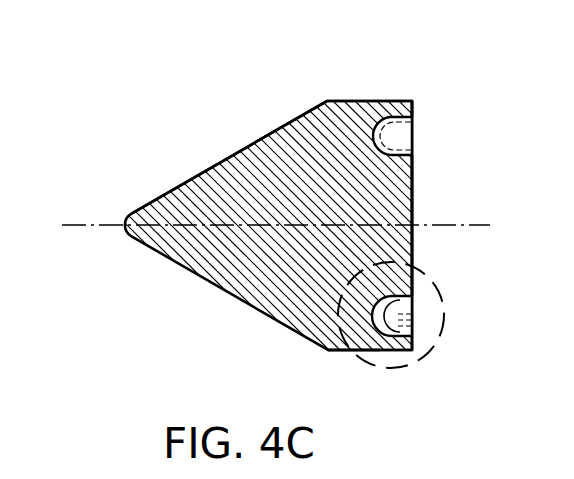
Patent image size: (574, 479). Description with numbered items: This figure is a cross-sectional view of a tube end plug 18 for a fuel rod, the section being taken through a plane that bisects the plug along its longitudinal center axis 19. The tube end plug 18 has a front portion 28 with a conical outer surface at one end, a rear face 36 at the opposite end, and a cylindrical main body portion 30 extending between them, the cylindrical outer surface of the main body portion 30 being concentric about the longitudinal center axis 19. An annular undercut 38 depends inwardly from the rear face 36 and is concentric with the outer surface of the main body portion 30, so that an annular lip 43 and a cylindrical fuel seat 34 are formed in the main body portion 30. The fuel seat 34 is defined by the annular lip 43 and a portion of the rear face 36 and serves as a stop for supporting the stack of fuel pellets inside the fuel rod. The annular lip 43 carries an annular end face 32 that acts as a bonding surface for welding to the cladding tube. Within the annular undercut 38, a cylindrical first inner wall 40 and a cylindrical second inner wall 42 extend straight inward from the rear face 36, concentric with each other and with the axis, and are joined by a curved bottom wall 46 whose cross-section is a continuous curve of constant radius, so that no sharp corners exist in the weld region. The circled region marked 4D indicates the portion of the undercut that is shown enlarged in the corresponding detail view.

The tube end plug 18 is at (230, 98).
The longitudinal center axis 19 is at (100, 222).
The front portion 28 is at (197, 176).
The cylindrical main body portion 30 is at (363, 101).
The annular end face 32 is at (412, 350).
The cylindrical fuel seat 34 is at (430, 185).
The rear face 36 is at (412, 213).
The annular undercut 38 is at (402, 140).
The cylindrical first inner wall 40 is at (403, 299).
The cylindrical second inner wall 42 is at (404, 323).
The annular lip 43 is at (424, 108).
The curved bottom wall 46 is at (378, 350).
The detail view 4D is at (412, 348).